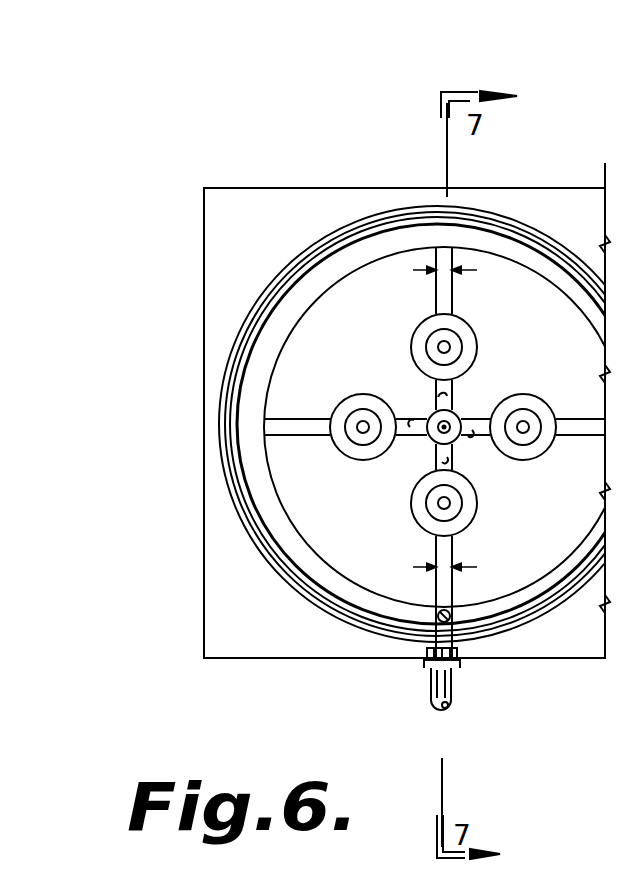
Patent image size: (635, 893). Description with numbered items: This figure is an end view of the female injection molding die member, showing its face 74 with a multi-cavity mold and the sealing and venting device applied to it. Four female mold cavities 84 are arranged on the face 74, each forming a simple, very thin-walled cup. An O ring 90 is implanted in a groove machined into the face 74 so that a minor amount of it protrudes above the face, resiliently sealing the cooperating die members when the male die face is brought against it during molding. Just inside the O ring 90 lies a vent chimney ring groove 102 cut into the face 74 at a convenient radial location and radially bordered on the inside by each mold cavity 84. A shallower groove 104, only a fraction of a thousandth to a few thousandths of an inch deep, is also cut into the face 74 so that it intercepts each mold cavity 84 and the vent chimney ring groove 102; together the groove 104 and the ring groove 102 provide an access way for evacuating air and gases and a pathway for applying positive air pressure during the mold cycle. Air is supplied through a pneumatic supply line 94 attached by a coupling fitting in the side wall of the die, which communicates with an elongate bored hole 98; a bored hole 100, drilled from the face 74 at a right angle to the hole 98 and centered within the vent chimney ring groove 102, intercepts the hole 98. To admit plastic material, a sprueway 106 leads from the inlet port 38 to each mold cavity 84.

The face of the female die member 74 is at (245, 594).
The O ring 90 is at (220, 395).
The vent chimney ring groove 102 is at (276, 358).
The inlet port 38 is at (457, 416).
The shallower groove 104 is at (436, 268).
The female mold cavity 84 is at (471, 335).
The sprueway 106 is at (410, 427).
The bored hole 100 is at (440, 619).
The elongate bored hole 98 is at (453, 636).
The pneumatic supply line 94 is at (443, 708).